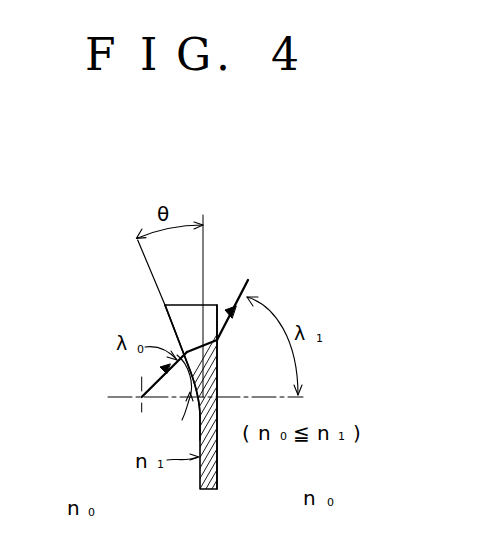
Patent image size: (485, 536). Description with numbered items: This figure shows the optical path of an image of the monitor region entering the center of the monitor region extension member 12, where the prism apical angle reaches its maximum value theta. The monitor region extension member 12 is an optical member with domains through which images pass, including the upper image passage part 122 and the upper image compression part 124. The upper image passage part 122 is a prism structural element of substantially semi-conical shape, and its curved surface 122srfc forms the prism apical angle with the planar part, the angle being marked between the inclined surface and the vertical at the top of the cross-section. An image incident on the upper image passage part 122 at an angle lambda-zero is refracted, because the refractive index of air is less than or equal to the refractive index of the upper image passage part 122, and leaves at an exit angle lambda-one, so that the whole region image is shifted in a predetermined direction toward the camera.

The monitor region extension member 12 is at (209, 304).
The upper image passage part 122 is at (217, 362).
The curved surface 122srfc is at (165, 305).
The upper image compression part 124 is at (200, 427).